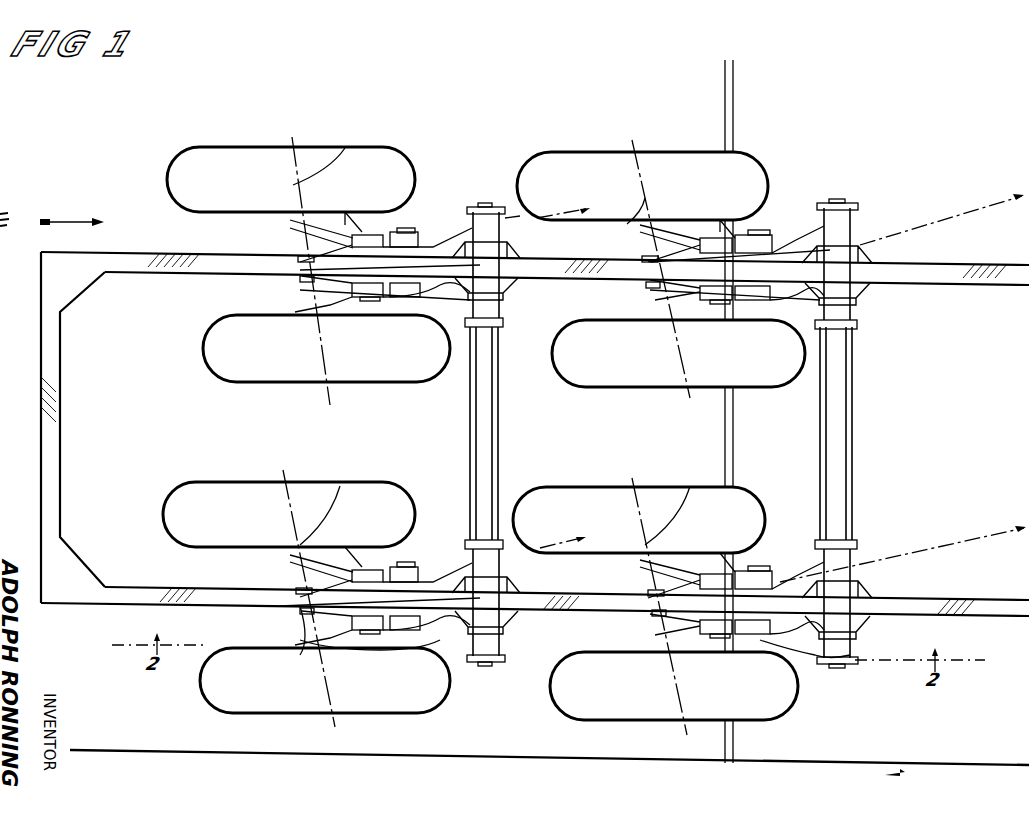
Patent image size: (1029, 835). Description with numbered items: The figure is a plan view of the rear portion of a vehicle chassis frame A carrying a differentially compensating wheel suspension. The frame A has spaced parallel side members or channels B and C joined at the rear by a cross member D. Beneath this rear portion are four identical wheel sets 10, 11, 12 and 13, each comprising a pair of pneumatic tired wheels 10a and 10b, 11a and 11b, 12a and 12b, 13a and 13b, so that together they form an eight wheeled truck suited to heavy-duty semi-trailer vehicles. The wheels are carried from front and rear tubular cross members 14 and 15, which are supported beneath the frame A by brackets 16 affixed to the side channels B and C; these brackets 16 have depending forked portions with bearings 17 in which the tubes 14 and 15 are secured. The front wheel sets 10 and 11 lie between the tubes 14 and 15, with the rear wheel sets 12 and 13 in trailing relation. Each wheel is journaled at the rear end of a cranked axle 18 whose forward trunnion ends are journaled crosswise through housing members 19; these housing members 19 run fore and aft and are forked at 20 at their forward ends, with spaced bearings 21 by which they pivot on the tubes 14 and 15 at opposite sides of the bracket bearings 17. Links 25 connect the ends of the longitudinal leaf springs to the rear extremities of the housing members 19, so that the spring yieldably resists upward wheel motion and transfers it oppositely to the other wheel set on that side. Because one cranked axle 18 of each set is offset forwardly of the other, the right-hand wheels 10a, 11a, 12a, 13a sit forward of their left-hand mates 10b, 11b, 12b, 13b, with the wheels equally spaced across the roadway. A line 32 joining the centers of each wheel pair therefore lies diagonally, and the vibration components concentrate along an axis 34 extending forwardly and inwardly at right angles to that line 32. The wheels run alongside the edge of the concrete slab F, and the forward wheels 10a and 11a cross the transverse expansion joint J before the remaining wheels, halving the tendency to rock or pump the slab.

The wheel set 10 is at (655, 615).
The pneumatic tired wheel 10a is at (573, 720).
The pneumatic tired wheel 10b is at (639, 520).
The wheel set 11 is at (661, 254).
The pneumatic tired wheel 11a is at (678, 353).
The pneumatic tired wheel 11b is at (642, 186).
The wheel set 12 is at (306, 612).
The pneumatic tired wheel 12a is at (244, 716).
The pneumatic tired wheel 12b is at (289, 514).
The wheel set 13 is at (308, 249).
The pneumatic tired wheel 13a is at (326, 348).
The pneumatic tired wheel 13b is at (291, 179).
The front tubular cross member 14 is at (854, 453).
The rear tubular cross member 15 is at (500, 440).
The bracket 16 is at (521, 252).
The bearing 17 is at (861, 241).
The cranked axle 18 is at (300, 236).
The housing member 19 is at (406, 234).
The forked portion 20 is at (439, 226).
The bearing 21 is at (503, 215).
The link 25 is at (648, 286).
The line joining wheel centers 32 is at (491, 336).
The axis line 34 is at (564, 212).
The vehicle chassis frame A is at (1000, 264).
The side member B is at (944, 600).
The side member C is at (972, 287).
The cross member D is at (61, 410).
The concrete slab F is at (458, 756).
The expansion joint J is at (734, 435).